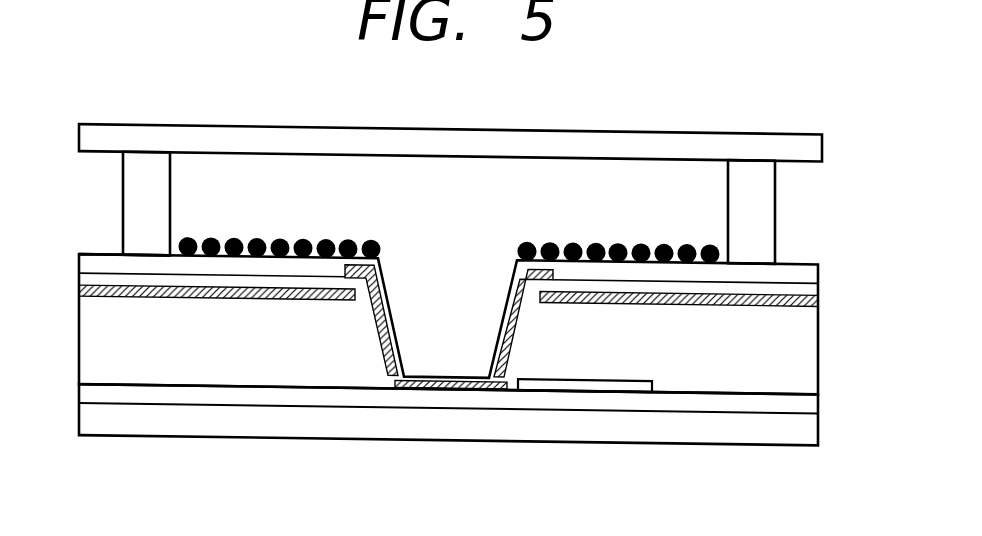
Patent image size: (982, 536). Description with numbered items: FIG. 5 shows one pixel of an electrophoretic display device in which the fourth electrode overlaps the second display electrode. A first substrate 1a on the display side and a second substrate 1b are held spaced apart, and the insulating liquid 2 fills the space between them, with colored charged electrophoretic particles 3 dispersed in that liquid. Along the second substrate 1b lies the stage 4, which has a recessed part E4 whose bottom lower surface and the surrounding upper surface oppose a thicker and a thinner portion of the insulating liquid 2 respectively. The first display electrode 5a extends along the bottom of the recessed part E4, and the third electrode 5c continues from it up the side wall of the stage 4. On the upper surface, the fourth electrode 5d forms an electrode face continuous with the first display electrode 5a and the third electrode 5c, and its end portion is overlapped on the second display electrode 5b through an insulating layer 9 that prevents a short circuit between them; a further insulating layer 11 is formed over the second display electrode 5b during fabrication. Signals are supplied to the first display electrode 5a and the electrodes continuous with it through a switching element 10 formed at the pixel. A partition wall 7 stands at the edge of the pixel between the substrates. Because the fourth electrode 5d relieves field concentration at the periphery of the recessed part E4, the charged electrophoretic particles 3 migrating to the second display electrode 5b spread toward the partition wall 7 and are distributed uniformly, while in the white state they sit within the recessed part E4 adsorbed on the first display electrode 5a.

The first substrate 1a is at (805, 153).
The second substrate 1b is at (800, 436).
The insulating liquid 2 is at (467, 205).
The charged electrophoretic particles 3 is at (598, 241).
The stage 4 is at (802, 361).
The first display electrode 5a is at (492, 388).
The second display electrode 5b is at (743, 307).
The third electrode 5c is at (385, 353).
The fourth electrode 5d is at (524, 268).
The partition wall 7 is at (760, 200).
The insulating layer 9 is at (805, 291).
The switching element 10 is at (613, 388).
The insulating layer 11 is at (105, 257).
The recessed part E4 is at (470, 332).